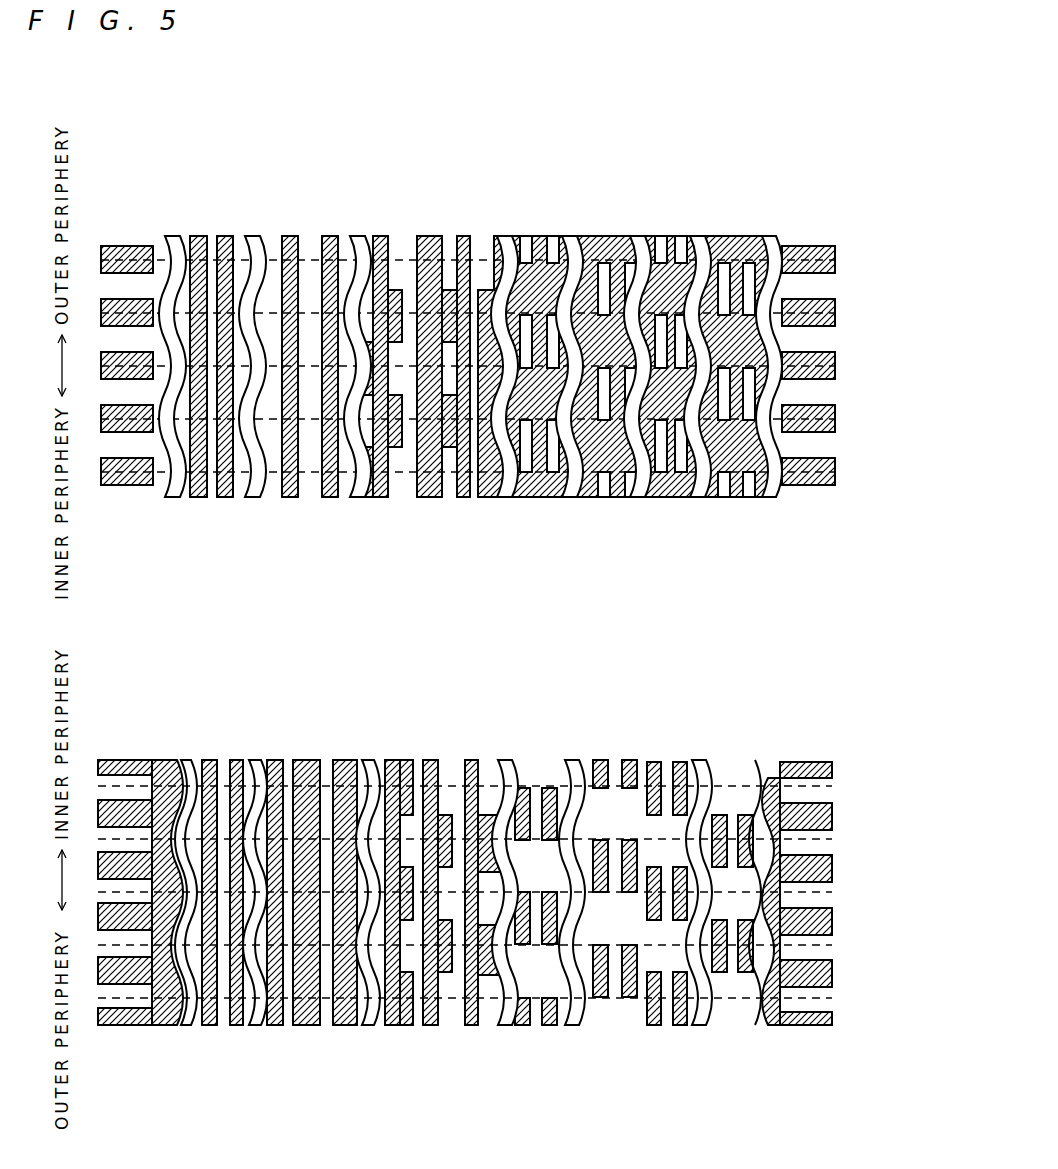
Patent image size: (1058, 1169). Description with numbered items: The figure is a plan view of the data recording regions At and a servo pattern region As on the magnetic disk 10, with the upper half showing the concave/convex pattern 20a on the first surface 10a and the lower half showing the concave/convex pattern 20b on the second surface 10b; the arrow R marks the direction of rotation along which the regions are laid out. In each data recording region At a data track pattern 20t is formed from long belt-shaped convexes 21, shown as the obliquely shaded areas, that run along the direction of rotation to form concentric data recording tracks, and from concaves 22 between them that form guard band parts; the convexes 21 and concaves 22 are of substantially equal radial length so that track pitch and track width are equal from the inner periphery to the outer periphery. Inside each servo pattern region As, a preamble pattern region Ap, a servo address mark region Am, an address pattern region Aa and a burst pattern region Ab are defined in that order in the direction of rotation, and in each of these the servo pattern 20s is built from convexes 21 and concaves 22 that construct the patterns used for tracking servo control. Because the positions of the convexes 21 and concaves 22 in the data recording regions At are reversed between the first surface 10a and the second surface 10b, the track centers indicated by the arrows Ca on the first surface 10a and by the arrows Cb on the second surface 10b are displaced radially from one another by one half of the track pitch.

The magnetic disk 10 is at (540, 120).
The first surface 10a is at (388, 200).
The second surface 10b is at (388, 722).
The concave/convex pattern 20a is at (476, 234).
The concave/convex pattern 20b is at (476, 758).
The servo pattern 20s is at (570, 500).
The data track pattern 20t is at (125, 487).
The convex 21 is at (136, 392).
The concave 22 is at (140, 445).
The data recording region At is at (153, 232).
The preamble pattern region Ap is at (248, 232).
The servo address mark region Am is at (350, 232).
The address pattern region Aa is at (490, 232).
The burst pattern region Ab is at (760, 232).
The servo pattern region As is at (678, 217).
The rotation direction R is at (672, 183).
The arrows indicating track centers on the first surface Ca is at (842, 368).
The arrows indicating track centers on the second surface Cb is at (836, 920).